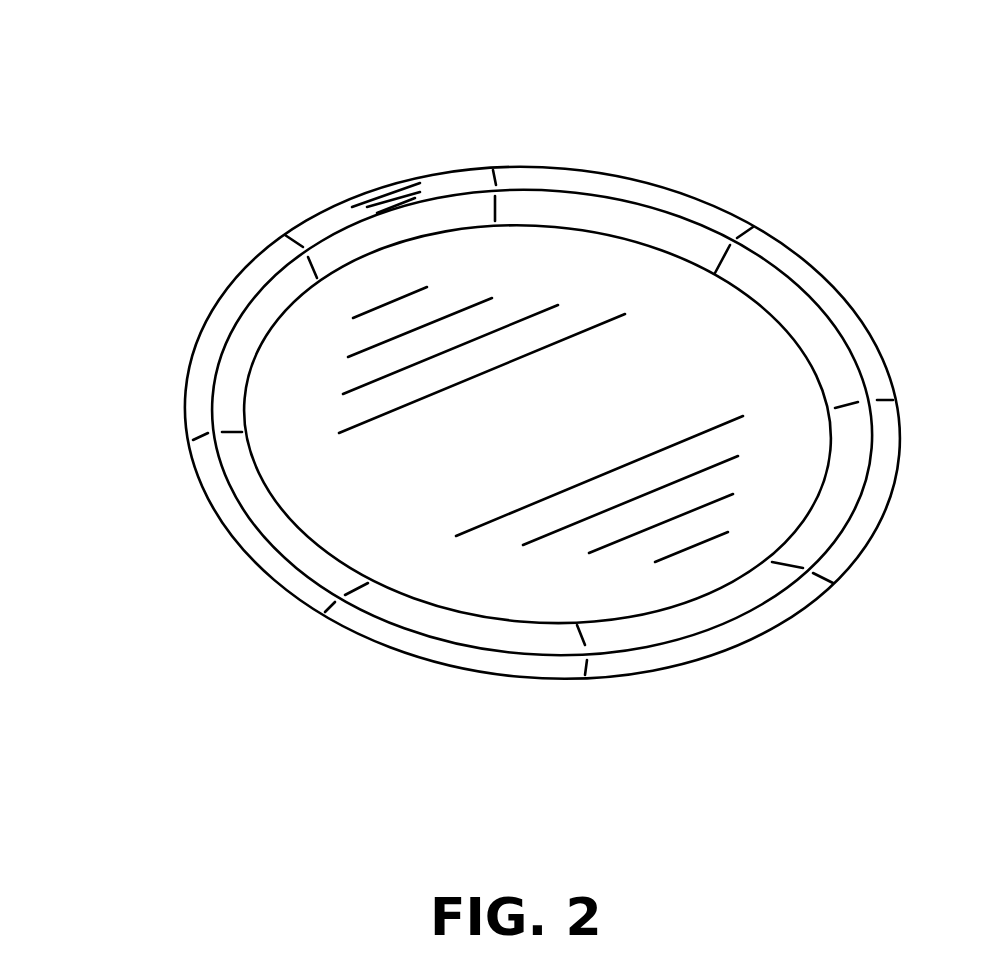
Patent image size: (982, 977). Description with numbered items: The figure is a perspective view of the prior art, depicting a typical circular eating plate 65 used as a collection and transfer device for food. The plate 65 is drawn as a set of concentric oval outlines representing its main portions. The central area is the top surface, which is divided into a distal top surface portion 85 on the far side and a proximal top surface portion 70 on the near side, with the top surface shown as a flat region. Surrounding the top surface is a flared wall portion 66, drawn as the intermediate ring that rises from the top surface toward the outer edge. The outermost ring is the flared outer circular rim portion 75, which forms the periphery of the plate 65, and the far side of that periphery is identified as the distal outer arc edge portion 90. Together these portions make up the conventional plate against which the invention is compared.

The circular eating plate 65 is at (542, 481).
The flared wall portion 66 is at (542, 501).
The proximal top surface portion 70 is at (445, 399).
The flared outer circular rim portion 75 is at (330, 483).
The distal top surface portion 85 is at (495, 287).
The distal outer arc edge portion 90 is at (622, 337).